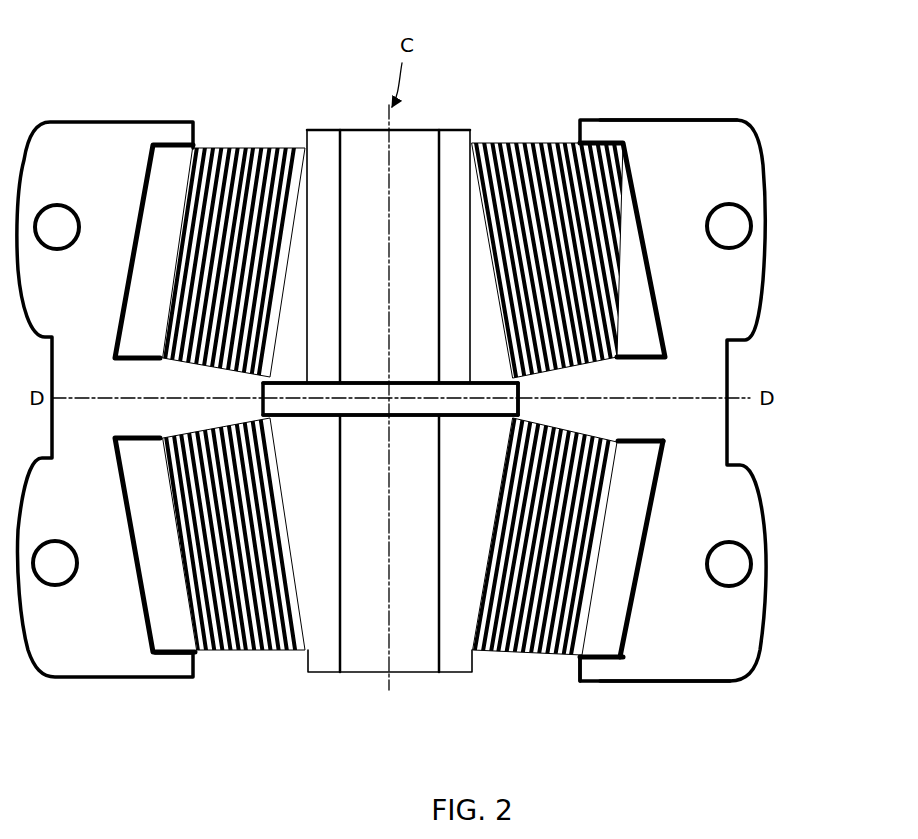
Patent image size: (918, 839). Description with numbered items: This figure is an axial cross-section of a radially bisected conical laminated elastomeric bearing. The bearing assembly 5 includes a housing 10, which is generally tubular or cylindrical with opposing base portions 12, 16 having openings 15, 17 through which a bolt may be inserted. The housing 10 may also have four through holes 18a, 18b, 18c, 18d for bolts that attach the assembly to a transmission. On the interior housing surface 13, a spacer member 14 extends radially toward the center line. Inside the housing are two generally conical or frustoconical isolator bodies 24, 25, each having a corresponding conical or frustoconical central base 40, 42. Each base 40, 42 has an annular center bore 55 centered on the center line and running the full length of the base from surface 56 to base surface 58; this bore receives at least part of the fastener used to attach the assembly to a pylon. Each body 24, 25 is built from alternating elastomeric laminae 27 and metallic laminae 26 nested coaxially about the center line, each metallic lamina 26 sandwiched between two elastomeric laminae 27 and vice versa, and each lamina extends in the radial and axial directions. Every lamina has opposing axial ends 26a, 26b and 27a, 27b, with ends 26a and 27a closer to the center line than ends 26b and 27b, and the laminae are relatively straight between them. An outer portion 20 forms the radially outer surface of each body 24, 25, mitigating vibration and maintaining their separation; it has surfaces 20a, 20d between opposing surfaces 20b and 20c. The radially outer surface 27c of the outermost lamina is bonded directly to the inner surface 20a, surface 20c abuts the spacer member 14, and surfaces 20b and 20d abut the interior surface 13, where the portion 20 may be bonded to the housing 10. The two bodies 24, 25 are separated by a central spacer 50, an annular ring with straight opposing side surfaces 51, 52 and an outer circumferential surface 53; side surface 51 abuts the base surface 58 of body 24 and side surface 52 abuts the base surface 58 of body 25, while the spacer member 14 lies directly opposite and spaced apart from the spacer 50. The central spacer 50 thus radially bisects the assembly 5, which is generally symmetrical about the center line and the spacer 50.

The bearing assembly 5 is at (738, 97).
The housing 10 is at (762, 160).
The base portion 12 is at (663, 117).
The interior housing surface 13 is at (145, 192).
The spacer member 14 is at (693, 416).
The opening 15 is at (362, 693).
The base portion 16 is at (667, 682).
The opening 17 is at (565, 100).
The through hole 18a is at (40, 205).
The through hole 18b is at (52, 588).
The through hole 18c is at (753, 225).
The through hole 18d is at (757, 562).
The outer portion 20 is at (625, 143).
The inner surface 20a is at (653, 513).
The surface 20b is at (605, 660).
The surface 20c is at (640, 447).
The surface 20d is at (625, 647).
The isolator body 24 is at (658, 277).
The isolator body 25 is at (637, 620).
The metallic lamina 26 is at (512, 147).
The axial end 26a is at (247, 652).
The axial end 26b is at (208, 435).
The elastomeric lamina 27 is at (518, 148).
The axial end 27a is at (240, 652).
The axial end 27b is at (207, 435).
The radially outer surface 27c is at (590, 640).
The central base 40 is at (467, 140).
The central base 42 is at (317, 672).
The central spacer 50 is at (490, 393).
The side surface 51 is at (472, 380).
The side surface 52 is at (463, 417).
The outer circumferential surface 53 is at (518, 405).
The center bore 55 is at (439, 148).
The surface 56 is at (318, 128).
The base surface 58 is at (297, 383).